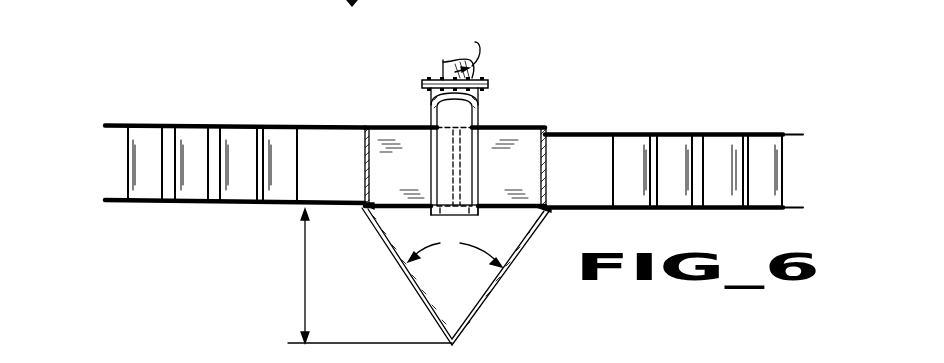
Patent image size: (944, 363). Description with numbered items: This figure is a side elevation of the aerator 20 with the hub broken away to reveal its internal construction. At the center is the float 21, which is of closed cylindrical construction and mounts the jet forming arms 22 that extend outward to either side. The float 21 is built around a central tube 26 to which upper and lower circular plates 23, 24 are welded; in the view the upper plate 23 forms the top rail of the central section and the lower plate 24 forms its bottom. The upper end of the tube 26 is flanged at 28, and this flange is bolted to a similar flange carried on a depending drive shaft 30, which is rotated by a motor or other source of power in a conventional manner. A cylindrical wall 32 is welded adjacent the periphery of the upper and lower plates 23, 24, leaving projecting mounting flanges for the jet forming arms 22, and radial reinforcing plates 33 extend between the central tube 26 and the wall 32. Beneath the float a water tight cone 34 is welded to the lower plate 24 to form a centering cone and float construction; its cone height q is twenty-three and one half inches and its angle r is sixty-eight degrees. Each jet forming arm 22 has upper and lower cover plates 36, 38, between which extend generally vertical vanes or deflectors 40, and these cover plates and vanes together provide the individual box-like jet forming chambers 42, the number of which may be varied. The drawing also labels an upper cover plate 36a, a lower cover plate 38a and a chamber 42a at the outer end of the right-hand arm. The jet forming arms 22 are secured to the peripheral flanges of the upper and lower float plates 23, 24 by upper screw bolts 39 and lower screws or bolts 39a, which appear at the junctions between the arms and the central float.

The aerator 20 is at (620, 73).
The central float 21 is at (515, 114).
The jet forming arms 22 is at (103, 118).
The upper circular plate 23 is at (382, 122).
The lower circular plate 24 is at (387, 212).
The central tube 26 is at (480, 97).
The flange 28 is at (422, 82).
The drive shaft 30 is at (443, 60).
The cylindrical wall 32 is at (364, 160).
The radial reinforcing plates 33 is at (413, 179).
The water tight cone 34 is at (492, 294).
The upper cover plate 36 is at (207, 124).
The upper rail extension 36a is at (803, 136).
The lower cover plate 38 is at (115, 198).
The lower rail extension 38a is at (803, 209).
The upper screw bolts 39 is at (358, 123).
The lower screws or bolts 39a is at (361, 210).
The vertical vanes or deflectors 40 is at (247, 132).
The jet forming chambers 42 is at (170, 130).
The outer vertical strut 42a is at (745, 140).
The cone height q is at (370, 276).
The cone angle r is at (455, 252).